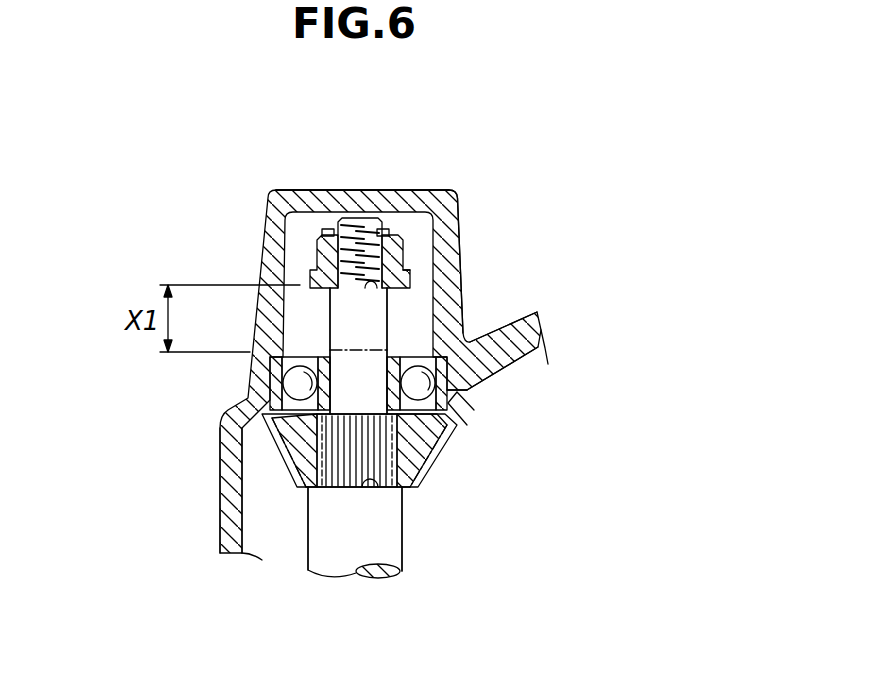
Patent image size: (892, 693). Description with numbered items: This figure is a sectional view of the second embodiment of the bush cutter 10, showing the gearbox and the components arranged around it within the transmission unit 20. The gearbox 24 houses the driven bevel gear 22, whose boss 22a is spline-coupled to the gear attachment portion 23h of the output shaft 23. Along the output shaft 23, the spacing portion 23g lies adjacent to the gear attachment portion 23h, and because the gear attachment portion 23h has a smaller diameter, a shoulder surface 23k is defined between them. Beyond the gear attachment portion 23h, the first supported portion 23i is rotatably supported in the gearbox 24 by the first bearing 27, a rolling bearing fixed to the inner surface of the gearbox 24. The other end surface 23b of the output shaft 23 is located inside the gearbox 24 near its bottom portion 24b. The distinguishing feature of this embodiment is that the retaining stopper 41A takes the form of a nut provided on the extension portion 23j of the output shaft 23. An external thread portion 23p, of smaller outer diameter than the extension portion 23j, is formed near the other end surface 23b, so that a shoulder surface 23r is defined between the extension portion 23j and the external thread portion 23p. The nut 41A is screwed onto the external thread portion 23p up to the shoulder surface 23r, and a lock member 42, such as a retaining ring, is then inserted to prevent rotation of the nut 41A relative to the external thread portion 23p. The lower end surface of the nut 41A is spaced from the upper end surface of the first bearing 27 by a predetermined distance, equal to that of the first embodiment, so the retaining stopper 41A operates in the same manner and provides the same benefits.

The bush cutter 10 is at (700, 197).
The transmission unit 20 is at (527, 432).
The driven bevel gear 22 is at (283, 477).
The boss 22a is at (295, 432).
The output shaft 23 is at (305, 560).
The other end surface 23b is at (350, 218).
The spacing portion 23g is at (385, 532).
The gear attachment portion 23h is at (373, 448).
The first supported portion 23i is at (463, 391).
The extension portion 23j is at (375, 326).
The shoulder surface 23k is at (390, 485).
The external thread portion 23p is at (403, 270).
The shoulder surface 23r is at (374, 288).
The gearbox 24 is at (265, 243).
The bottom portion 24b is at (310, 198).
The first bearing 27 is at (273, 377).
The retaining stopper 41A is at (403, 243).
The lock member 42 is at (372, 237).